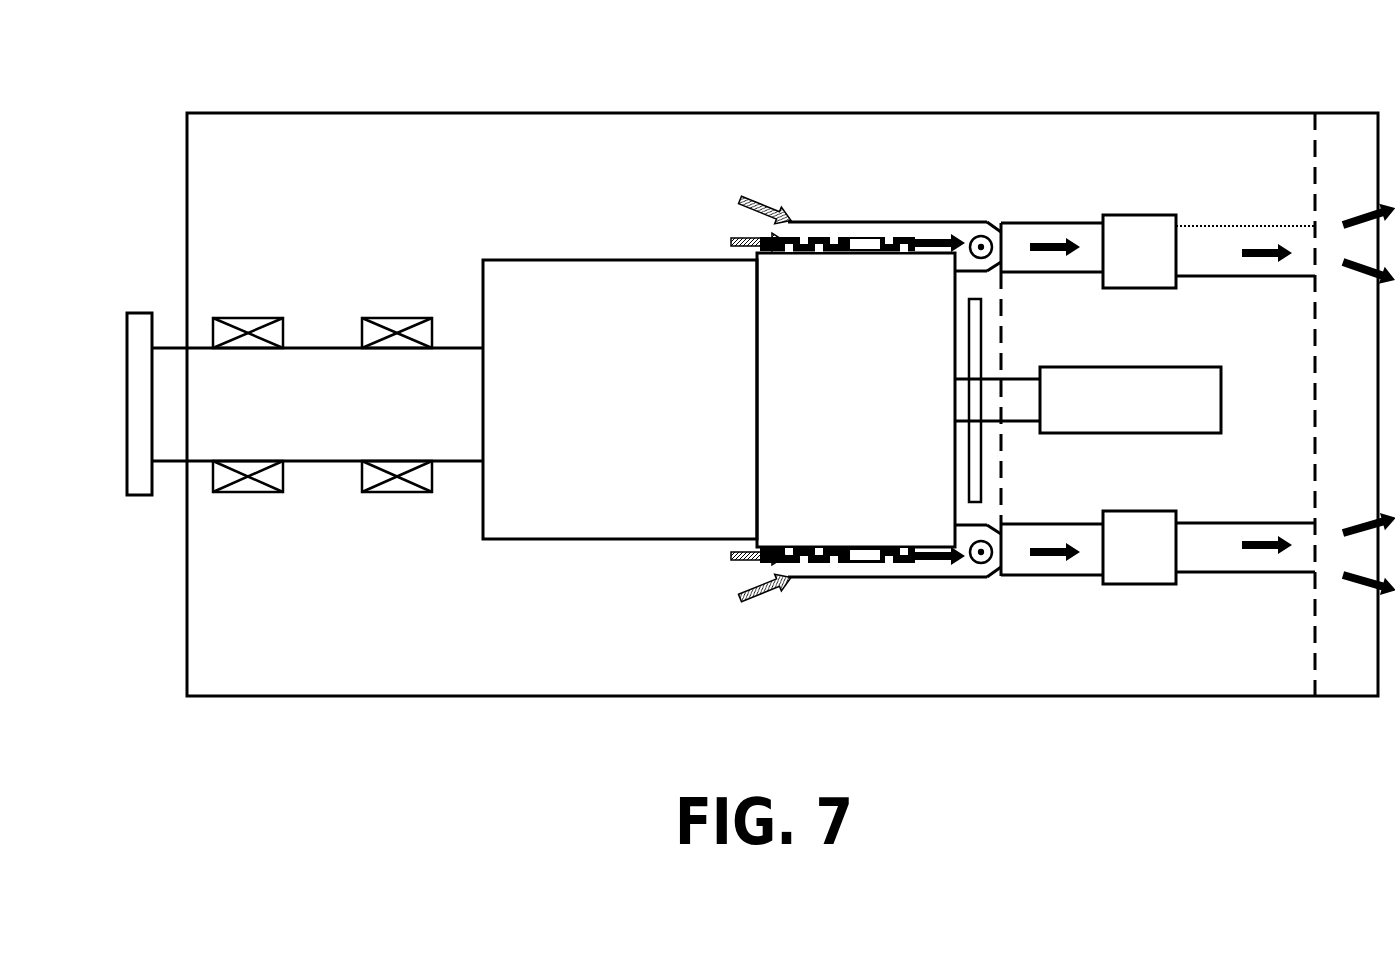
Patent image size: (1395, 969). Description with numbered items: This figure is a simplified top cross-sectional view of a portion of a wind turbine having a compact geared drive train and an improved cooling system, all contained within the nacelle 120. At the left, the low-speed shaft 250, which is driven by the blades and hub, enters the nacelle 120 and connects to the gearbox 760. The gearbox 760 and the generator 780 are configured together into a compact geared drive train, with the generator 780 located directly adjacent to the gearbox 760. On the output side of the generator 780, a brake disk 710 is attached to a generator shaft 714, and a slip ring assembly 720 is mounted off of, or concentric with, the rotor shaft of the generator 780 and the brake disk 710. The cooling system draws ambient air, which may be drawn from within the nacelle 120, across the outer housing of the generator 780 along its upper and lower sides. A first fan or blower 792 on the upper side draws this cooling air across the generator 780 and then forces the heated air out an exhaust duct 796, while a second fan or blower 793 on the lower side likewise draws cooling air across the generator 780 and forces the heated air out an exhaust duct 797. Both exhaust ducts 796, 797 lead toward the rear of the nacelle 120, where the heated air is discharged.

The nacelle 120 is at (780, 112).
The low-speed shaft 250 is at (276, 420).
The gearbox 760 is at (652, 421).
The generator 780 is at (890, 421).
The brake disk 710 is at (975, 343).
The generator shaft 714 is at (1019, 412).
The slip ring assembly 720 is at (1094, 416).
The first fan or blower 792 is at (1122, 227).
The second fan or blower 793 is at (1140, 587).
The exhaust duct 796 is at (1268, 235).
The exhaust duct 797 is at (1268, 573).